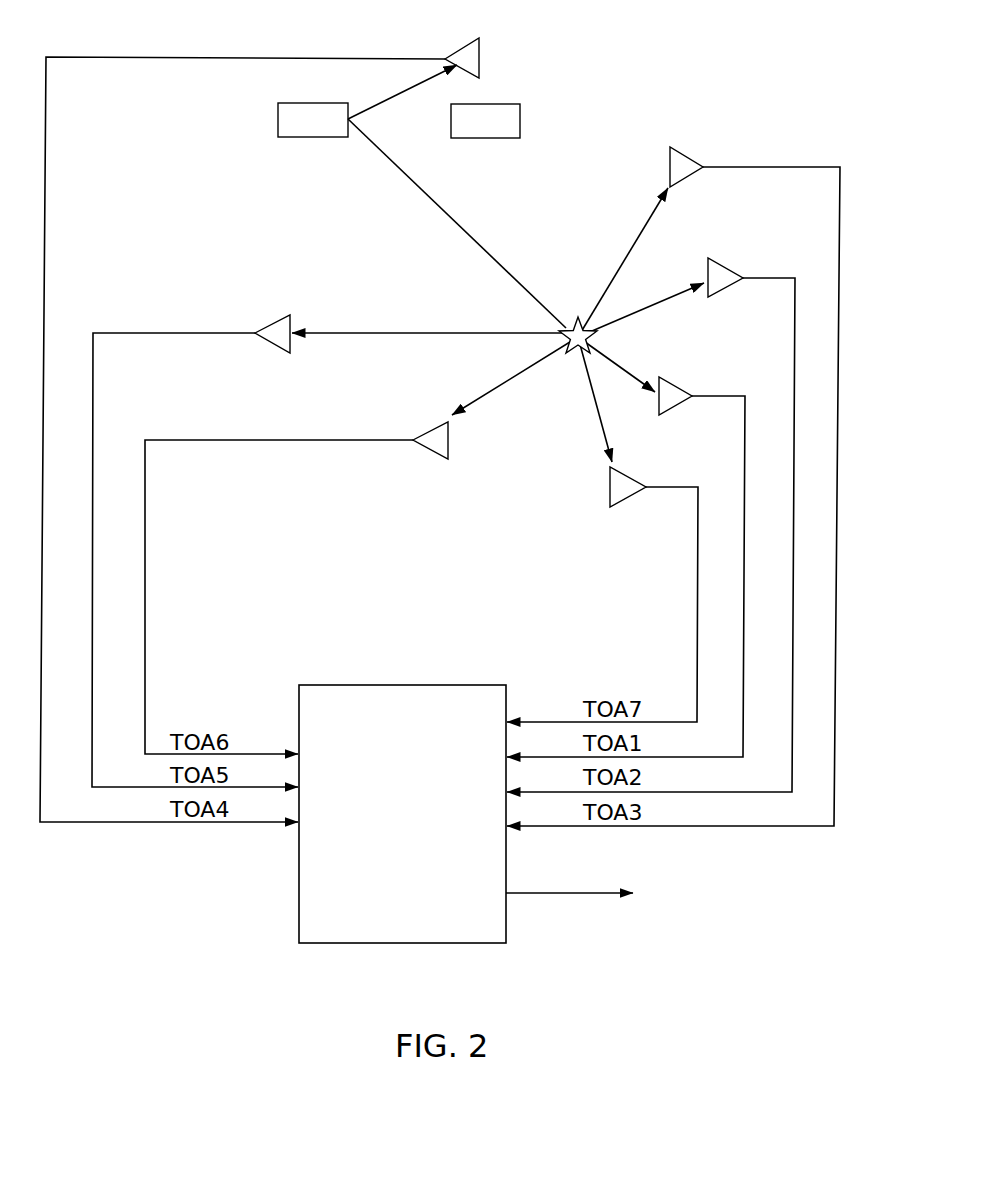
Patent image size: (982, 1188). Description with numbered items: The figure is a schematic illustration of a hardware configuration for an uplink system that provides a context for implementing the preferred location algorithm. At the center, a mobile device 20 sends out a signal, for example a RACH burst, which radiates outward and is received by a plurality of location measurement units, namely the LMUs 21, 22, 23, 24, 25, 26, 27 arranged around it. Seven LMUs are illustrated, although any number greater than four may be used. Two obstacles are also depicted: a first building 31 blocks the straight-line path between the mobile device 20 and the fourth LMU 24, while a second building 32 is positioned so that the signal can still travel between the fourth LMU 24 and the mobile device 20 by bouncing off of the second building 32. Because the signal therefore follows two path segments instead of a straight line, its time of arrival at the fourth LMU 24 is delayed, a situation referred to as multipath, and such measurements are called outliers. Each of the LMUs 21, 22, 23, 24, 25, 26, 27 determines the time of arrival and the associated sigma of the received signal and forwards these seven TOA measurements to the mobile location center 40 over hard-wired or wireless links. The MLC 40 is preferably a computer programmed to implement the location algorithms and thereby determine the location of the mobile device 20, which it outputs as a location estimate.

The mobile device 20 is at (557, 327).
The LMU 21 is at (663, 372).
The LMU 22 is at (712, 254).
The LMU 23 is at (674, 143).
The fourth LMU 24 is at (481, 33).
The LMU 25 is at (293, 357).
The LMU 26 is at (451, 466).
The LMU 27 is at (608, 481).
The first building 31 is at (522, 117).
The second building 32 is at (277, 116).
The mobile location center (MLC) 40 is at (297, 885).